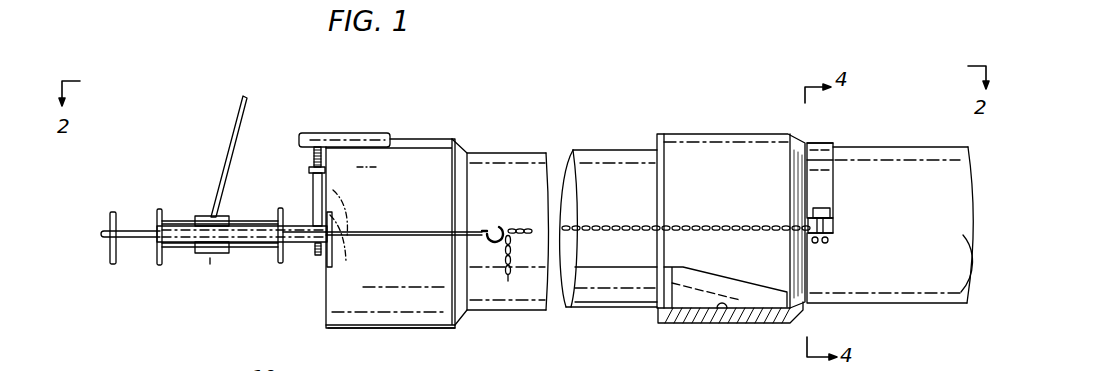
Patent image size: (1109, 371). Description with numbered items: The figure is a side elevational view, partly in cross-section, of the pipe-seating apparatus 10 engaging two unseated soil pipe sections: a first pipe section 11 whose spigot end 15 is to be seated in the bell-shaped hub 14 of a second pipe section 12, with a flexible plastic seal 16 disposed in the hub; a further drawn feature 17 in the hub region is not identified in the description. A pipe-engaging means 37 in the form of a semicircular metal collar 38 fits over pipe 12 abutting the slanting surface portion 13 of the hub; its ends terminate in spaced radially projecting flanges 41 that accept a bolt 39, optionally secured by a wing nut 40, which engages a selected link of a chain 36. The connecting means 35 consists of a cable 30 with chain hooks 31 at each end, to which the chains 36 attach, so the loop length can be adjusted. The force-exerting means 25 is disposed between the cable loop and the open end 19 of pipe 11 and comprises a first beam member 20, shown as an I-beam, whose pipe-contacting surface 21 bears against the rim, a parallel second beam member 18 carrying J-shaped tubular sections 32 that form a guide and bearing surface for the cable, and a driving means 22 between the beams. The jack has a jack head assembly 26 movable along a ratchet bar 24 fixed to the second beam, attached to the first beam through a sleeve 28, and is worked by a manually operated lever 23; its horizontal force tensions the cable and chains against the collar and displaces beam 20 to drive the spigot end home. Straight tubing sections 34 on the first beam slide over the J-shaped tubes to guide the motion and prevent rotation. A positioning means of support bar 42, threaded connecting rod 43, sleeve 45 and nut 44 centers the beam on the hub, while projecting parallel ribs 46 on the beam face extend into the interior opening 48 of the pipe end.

The pipe-seating apparatus 10 is at (157, 95).
The first pipe section 11 is at (487, 152).
The second pipe section 12 is at (925, 147).
The slanting surface portion 13 is at (800, 138).
The bell-shaped hub 14 is at (418, 137).
The spigot end 15 is at (647, 150).
The flexible plastic seal 16 is at (722, 310).
The wedge 17 is at (677, 283).
The second beam member 18 is at (110, 213).
The open end 19 is at (328, 328).
The first beam member 20 is at (275, 257).
The pipe-contacting surface 21 is at (330, 262).
The driving means 22 is at (222, 220).
The manually operated lever 23 is at (238, 115).
The ratchet bar 24 is at (175, 217).
The force-exerting means 25 is at (212, 263).
The jack head assembly 26 is at (200, 253).
The sleeve 28 is at (262, 220).
The cable 30 is at (435, 237).
The chain hooks 31 is at (498, 243).
The J-shaped tubular sections 32 is at (132, 247).
The straight tubing sections 34 is at (297, 247).
The connecting means 35 is at (479, 218).
The chains 36 is at (733, 225).
The pipe-engaging means 37 is at (842, 138).
The semicircular metal collar 38 is at (815, 178).
The bolt 39 is at (833, 223).
The wing nut 40 is at (813, 243).
The radially projecting flanges 41 is at (835, 212).
The support bar 42 is at (331, 133).
The threaded connecting rod 43 is at (311, 165).
The nut 44 is at (326, 170).
The sleeve 45 is at (320, 197).
The projecting parallel ribs 46 is at (330, 220).
The interior opening 48 is at (338, 267).